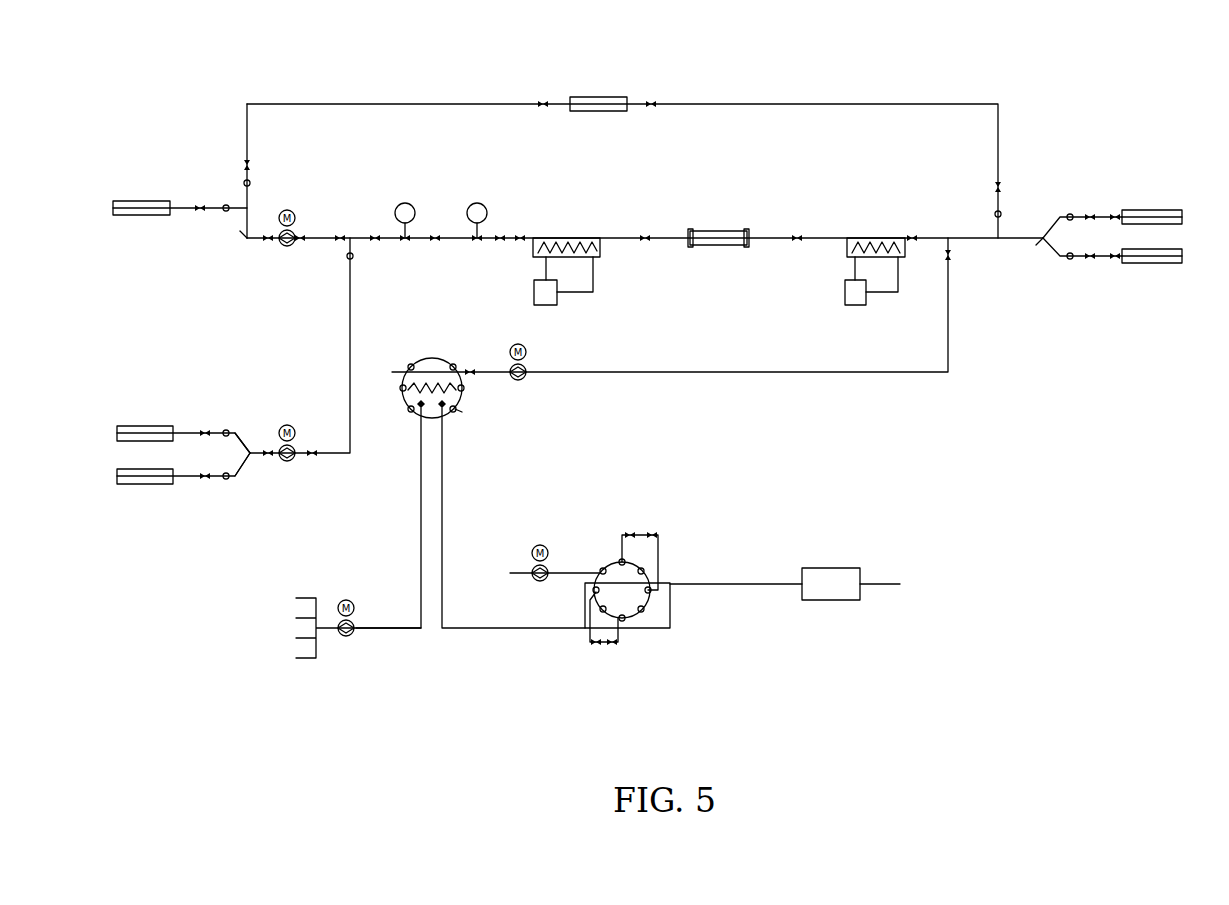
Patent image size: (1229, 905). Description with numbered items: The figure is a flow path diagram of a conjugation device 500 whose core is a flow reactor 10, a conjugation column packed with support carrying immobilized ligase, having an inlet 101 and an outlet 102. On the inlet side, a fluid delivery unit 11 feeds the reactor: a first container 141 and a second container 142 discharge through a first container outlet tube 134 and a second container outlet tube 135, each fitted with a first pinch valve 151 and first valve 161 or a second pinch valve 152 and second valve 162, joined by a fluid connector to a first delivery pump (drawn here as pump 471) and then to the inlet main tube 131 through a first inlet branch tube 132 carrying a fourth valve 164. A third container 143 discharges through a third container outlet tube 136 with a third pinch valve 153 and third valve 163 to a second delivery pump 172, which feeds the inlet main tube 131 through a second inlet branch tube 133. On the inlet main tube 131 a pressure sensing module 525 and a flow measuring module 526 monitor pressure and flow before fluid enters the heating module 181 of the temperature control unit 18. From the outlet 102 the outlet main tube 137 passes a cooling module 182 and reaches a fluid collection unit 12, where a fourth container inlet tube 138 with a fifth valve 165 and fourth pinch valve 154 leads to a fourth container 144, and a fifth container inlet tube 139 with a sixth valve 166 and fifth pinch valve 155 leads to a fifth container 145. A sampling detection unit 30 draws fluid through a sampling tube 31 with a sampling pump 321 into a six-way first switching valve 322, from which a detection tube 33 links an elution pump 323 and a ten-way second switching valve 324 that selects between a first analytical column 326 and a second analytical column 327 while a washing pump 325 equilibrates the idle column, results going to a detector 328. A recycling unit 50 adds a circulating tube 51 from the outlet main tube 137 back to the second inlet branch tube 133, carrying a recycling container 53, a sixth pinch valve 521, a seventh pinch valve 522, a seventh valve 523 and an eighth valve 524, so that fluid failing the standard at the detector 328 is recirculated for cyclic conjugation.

The conjugation device 500 is at (1148, 54).
The fluid delivery unit 11 is at (372, 222).
The recycling unit 50 is at (1028, 140).
The circulating tube 51 is at (790, 104).
The recycling container 53 is at (612, 97).
The third container 143 is at (132, 201).
The third pinch valve 153 is at (200, 205).
The third valve 163 is at (226, 205).
The seventh pinch valve 522 is at (250, 165).
The eighth valve 524 is at (250, 183).
The third container outlet tube 136 is at (240, 214).
The second delivery pump 172 is at (296, 226).
The second inlet branch tube 133 is at (335, 235).
The fourth valve 164 is at (354, 256).
The first inlet branch tube 132 is at (352, 340).
The pressure sensing module 525 is at (412, 205).
The inlet main tube 131 is at (436, 235).
The flow measuring module 526 is at (484, 205).
The temperature control unit 18 is at (553, 230).
The heating module 181 is at (596, 257).
The inlet 101 is at (688, 231).
The flow reactor 10 is at (722, 231).
The outlet 102 is at (750, 229).
The outlet main tube 137 is at (828, 238).
The cooling module 182 is at (905, 259).
The sixth pinch valve 521 is at (1000, 187).
The seventh valve 523 is at (1001, 214).
The fluid collection unit 12 is at (1072, 176).
The fifth container inlet tube 139 is at (1066, 215).
The sixth valve 166 is at (1090, 213).
The fifth pinch valve 155 is at (1108, 215).
The fifth container 145 is at (1172, 210).
The fifth valve 165 is at (1071, 253).
The fourth pinch valve 154 is at (1094, 254).
The fourth container 144 is at (1172, 249).
The fourth container inlet tube 138 is at (1052, 254).
The sampling tube 31 is at (950, 342).
The sampling detection unit 30 is at (604, 346).
The sampling pump 321 is at (527, 357).
The first switching valve 322 is at (462, 408).
The detection tube 33 is at (444, 474).
The first container 141 is at (137, 426).
The first pinch valve 151 is at (205, 430).
The first valve 161 is at (228, 430).
The first container outlet tube 134 is at (245, 444).
The second container 142 is at (133, 486).
The second pinch valve 152 is at (205, 473).
The second valve 162 is at (228, 480).
The second container outlet tube 135 is at (240, 466).
The pump 471 is at (296, 447).
The elution pump 323 is at (356, 616).
The washing pump 325 is at (530, 558).
The second switching valve 324 is at (658, 565).
The first analytical column 326 is at (640, 535).
The second analytical column 327 is at (600, 645).
The detector 328 is at (840, 568).